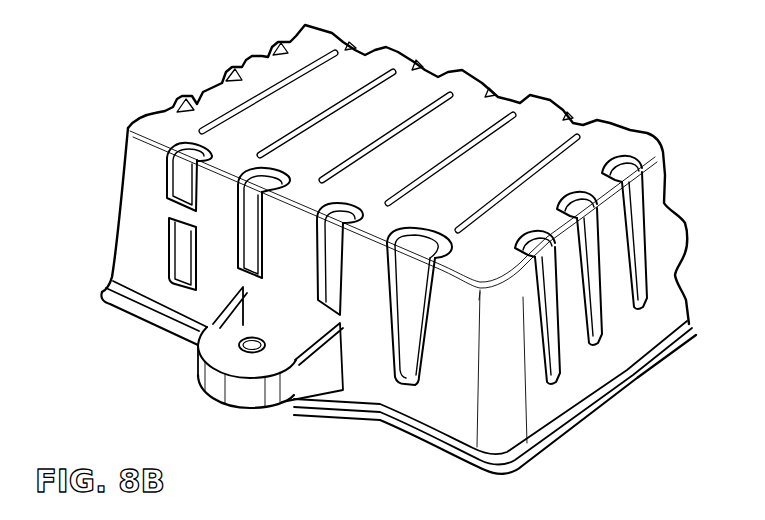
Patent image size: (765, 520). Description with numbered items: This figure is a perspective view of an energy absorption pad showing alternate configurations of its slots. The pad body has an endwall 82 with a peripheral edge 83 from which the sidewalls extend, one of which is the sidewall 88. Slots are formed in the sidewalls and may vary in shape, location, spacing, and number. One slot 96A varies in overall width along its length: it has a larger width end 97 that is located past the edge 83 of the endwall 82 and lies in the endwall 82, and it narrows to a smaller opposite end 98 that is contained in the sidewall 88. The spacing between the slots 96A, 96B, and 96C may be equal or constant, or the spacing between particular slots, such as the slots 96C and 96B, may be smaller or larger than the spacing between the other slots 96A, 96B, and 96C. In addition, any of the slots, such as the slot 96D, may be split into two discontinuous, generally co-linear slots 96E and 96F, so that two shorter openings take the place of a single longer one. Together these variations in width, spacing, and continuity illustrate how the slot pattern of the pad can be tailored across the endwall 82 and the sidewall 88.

The endwall 82 is at (395, 100).
The peripheral edge 83 is at (372, 233).
The sidewall 88 is at (358, 340).
The slot 96A is at (430, 302).
The slot 96B is at (345, 239).
The slot 96C is at (260, 210).
The slot 96D is at (168, 171).
The slot 96E is at (167, 183).
The slot 96F is at (170, 250).
The larger width end 97 is at (428, 252).
The smaller opposite end 98 is at (398, 380).